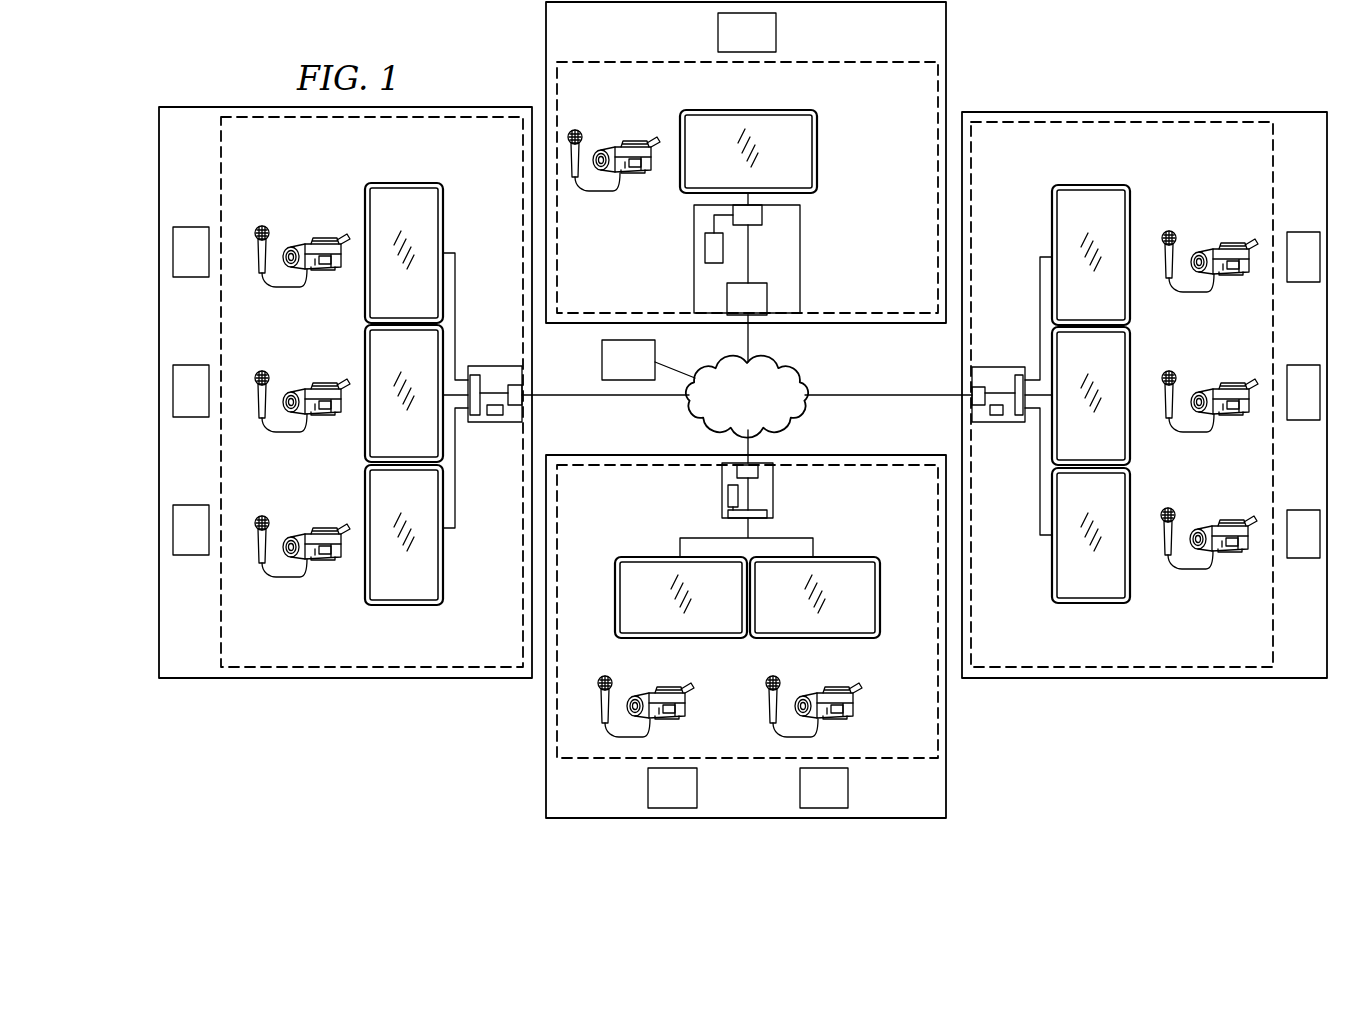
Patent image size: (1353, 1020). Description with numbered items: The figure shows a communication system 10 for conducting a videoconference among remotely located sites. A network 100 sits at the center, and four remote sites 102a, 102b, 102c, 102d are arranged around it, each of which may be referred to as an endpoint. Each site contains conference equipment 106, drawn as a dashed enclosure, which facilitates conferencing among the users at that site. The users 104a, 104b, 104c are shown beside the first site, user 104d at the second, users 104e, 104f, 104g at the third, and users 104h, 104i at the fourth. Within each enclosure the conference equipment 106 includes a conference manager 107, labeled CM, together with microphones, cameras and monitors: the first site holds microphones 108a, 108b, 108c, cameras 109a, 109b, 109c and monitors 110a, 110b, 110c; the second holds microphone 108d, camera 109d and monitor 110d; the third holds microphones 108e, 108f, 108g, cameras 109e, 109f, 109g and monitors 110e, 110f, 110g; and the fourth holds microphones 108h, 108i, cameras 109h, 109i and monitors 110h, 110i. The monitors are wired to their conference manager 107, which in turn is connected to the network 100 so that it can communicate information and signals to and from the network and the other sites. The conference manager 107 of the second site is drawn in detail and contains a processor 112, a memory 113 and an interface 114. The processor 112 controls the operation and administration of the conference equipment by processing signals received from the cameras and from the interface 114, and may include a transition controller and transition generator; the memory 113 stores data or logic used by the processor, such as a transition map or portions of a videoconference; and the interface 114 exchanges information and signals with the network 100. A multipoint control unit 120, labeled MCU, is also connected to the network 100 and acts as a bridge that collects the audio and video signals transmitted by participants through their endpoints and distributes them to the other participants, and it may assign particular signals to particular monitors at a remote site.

The communication system 10 is at (428, 751).
The network 100 is at (840, 412).
The remote site 102a is at (1229, 110).
The remote site 102b is at (952, 84).
The remote site 102c is at (277, 688).
The remote site 102d is at (952, 754).
The user 104a is at (1303, 559).
The user 104b is at (1303, 421).
The user 104c is at (1303, 232).
The user 104d is at (718, 30).
The user 104e is at (186, 227).
The user 104f is at (190, 418).
The user 104g is at (190, 556).
The user 104h is at (648, 792).
The user 104i is at (848, 790).
The conference equipment 106 is at (498, 189).
The conference manager 107 is at (1005, 343).
The microphone 108a is at (1177, 513).
The microphone 108b is at (1167, 370).
The microphone 108c is at (1167, 230).
The microphone 108d is at (580, 129).
The microphone 108e is at (262, 226).
The microphone 108f is at (262, 371).
The microphone 108g is at (262, 516).
The microphone 108h is at (613, 678).
The microphone 108i is at (781, 678).
The camera 109a is at (1228, 548).
The camera 109b is at (1234, 382).
The camera 109c is at (1234, 242).
The camera 109d is at (638, 139).
The camera 109e is at (322, 237).
The camera 109f is at (322, 382).
The camera 109g is at (325, 560).
The camera 109h is at (696, 703).
The camera 109i is at (864, 703).
The monitor 110a is at (1100, 603).
The monitor 110b is at (1130, 442).
The monitor 110c is at (1102, 185).
The monitor 110d is at (817, 152).
The monitor 110e is at (390, 183).
The monitor 110f is at (365, 430).
The monitor 110g is at (395, 605).
The monitor 110h is at (660, 557).
The monitor 110i is at (866, 557).
The processor 112 is at (762, 215).
The memory 113 is at (705, 250).
The interface 114 is at (727, 300).
The multipoint control unit 120 is at (602, 358).